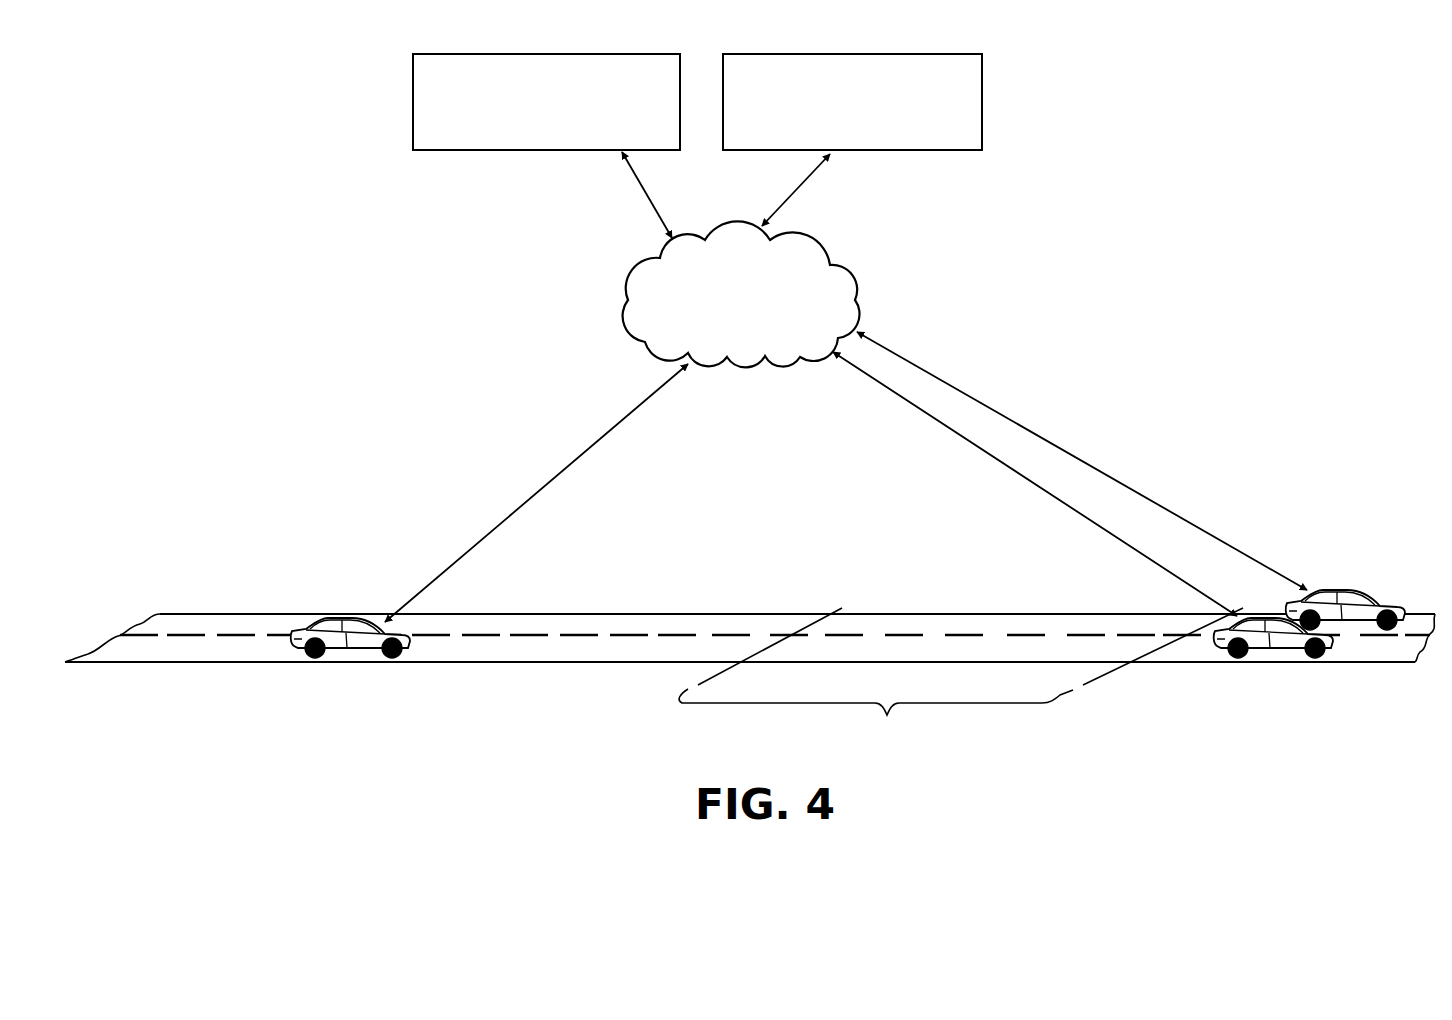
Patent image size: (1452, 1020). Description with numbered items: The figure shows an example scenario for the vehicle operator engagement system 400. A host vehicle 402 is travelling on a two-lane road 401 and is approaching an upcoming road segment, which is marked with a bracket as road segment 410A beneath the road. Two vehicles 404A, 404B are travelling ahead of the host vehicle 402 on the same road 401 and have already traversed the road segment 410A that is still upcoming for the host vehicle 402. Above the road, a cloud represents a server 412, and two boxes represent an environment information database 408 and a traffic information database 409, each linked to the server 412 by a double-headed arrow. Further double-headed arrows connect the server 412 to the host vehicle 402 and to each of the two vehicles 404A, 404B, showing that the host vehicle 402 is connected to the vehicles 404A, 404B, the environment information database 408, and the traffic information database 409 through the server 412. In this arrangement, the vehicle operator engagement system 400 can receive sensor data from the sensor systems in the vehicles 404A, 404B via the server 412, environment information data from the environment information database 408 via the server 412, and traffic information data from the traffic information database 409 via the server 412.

The vehicle operator engagement system 400 is at (1216, 166).
The two-lane road 401 is at (507, 622).
The host vehicle 402 is at (332, 652).
The vehicle 404A is at (1350, 590).
The vehicle 404B is at (1215, 642).
The environment information database 408 is at (530, 139).
The traffic information database 409 is at (870, 139).
The road segment 410A is at (961, 677).
The server 412 is at (722, 319).